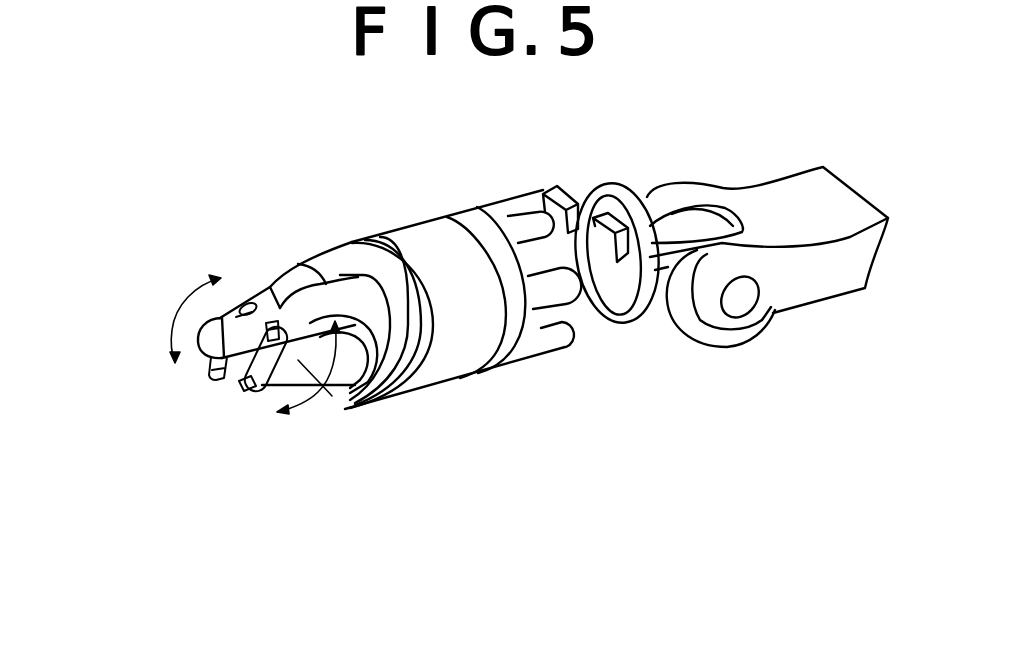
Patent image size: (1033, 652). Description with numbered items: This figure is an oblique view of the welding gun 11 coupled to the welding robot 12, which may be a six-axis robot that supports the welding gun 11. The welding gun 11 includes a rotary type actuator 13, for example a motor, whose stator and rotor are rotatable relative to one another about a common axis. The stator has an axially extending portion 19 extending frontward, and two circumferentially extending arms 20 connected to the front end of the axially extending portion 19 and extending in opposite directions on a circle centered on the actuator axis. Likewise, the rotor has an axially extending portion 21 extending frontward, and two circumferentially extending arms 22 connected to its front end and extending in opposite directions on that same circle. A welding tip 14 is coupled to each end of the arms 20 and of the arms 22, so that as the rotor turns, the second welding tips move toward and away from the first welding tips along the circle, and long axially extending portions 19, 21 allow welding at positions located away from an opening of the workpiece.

The welding gun 11 is at (437, 384).
The welding robot 12 is at (782, 287).
The rotary type actuator 13 is at (468, 375).
The welding tip 14 is at (250, 305).
The axially extending portion 19 is at (325, 386).
The circumferentially extending arm 20 is at (320, 297).
The axially extending portion 21 is at (212, 332).
The circumferentially extending arm 22 is at (245, 306).